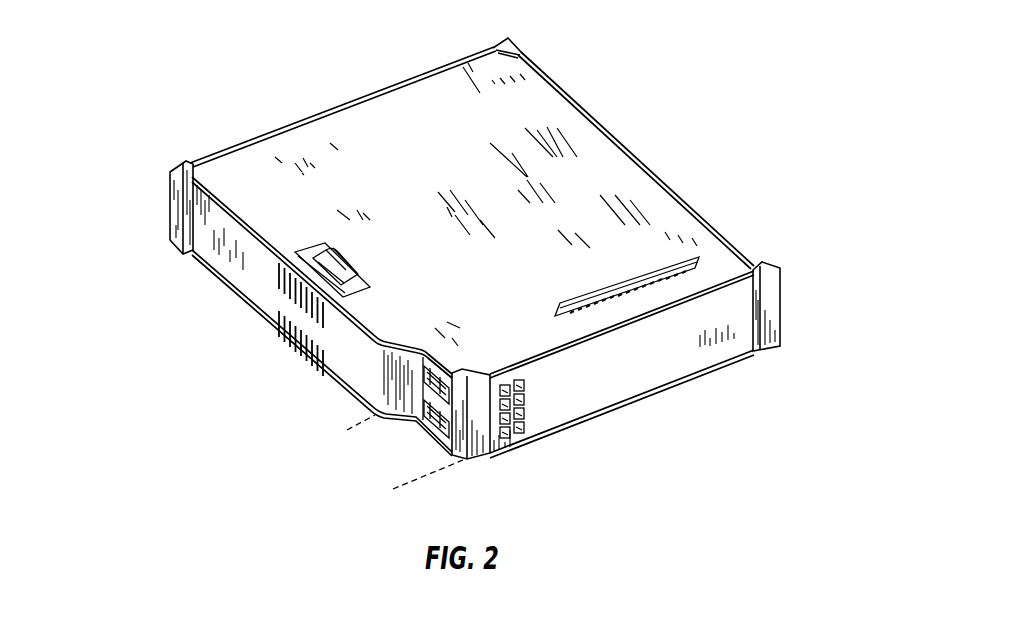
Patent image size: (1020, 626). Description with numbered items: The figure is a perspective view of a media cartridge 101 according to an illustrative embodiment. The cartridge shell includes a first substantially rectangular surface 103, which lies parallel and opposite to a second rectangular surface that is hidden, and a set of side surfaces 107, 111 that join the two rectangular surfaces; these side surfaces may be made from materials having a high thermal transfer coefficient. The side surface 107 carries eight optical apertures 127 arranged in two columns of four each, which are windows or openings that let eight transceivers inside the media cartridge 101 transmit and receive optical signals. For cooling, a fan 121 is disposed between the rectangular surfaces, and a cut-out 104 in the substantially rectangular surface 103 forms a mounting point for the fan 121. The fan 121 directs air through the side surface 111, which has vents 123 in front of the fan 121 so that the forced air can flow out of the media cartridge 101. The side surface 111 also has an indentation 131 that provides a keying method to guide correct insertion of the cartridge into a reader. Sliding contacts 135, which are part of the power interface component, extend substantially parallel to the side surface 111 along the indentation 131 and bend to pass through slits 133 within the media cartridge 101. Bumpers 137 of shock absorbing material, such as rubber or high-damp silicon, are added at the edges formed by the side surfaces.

The media cartridge 101 is at (668, 90).
The first substantially rectangular surface 103 is at (552, 104).
The cut-out 104 is at (372, 287).
The side surface 107 is at (663, 367).
The side surface 111 is at (208, 255).
The fan 121 is at (340, 268).
The vents 123 is at (290, 343).
The optical apertures 127 is at (524, 424).
The indentation 131 is at (393, 489).
The slits 133 is at (434, 430).
The sliding contacts 135 is at (418, 420).
The bumpers 137 is at (508, 40).